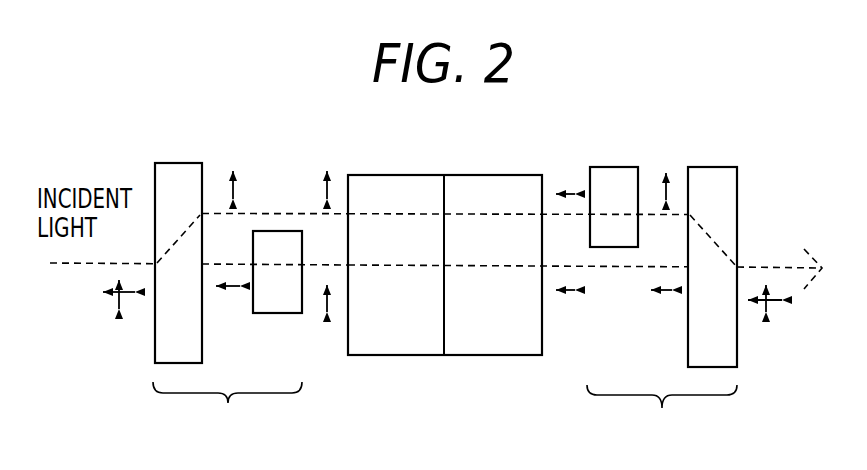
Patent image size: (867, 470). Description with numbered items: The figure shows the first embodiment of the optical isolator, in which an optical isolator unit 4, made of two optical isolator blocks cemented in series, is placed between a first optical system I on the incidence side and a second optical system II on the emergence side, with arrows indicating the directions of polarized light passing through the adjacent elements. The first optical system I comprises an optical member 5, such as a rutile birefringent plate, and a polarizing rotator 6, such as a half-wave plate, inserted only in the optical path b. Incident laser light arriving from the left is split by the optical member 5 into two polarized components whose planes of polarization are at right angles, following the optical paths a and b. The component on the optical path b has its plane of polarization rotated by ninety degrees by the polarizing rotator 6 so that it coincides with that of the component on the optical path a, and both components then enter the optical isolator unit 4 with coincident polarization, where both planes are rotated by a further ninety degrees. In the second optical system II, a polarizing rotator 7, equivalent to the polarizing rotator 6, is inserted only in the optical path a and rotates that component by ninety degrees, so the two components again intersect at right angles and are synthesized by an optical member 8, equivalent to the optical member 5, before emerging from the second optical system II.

The optical isolator unit 4 is at (505, 175).
The optical member 5 is at (186, 163).
The polarizing rotator 6 is at (290, 231).
The polarizing rotator 7 is at (618, 167).
The optical member 8 is at (722, 167).
The optical path a is at (402, 214).
The optical path b is at (405, 265).
The first optical system I is at (227, 411).
The second optical system II is at (662, 415).